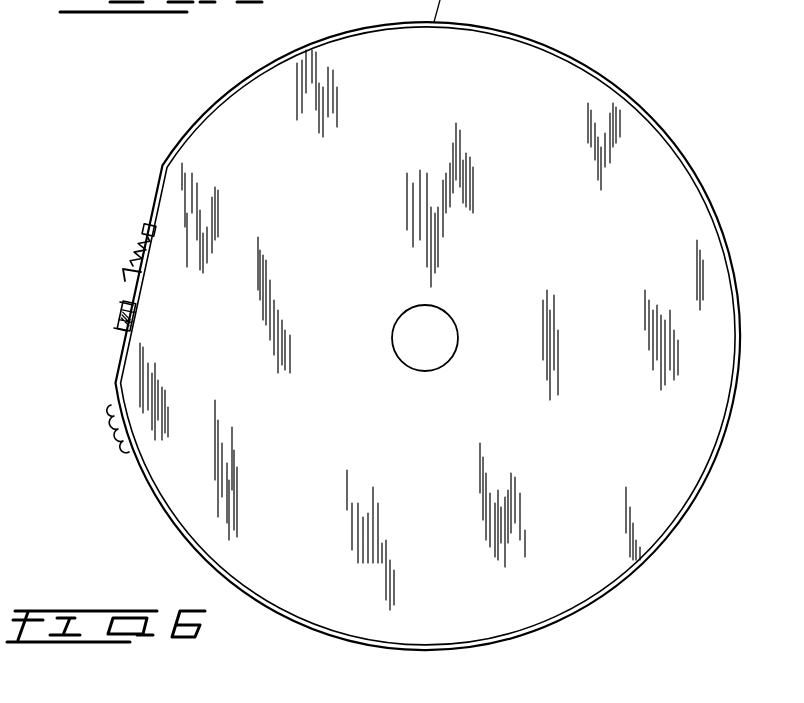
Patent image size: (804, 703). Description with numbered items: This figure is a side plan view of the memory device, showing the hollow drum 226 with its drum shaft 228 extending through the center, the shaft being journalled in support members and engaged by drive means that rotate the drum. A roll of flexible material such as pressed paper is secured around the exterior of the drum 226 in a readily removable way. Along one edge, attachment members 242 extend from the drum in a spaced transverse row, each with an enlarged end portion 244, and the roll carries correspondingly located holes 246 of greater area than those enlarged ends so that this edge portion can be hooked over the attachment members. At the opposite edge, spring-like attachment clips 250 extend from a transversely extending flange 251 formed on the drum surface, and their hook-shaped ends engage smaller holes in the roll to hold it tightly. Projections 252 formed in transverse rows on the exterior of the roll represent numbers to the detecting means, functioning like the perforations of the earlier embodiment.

The hollow drum 226 is at (667, 147).
The drum shaft 228 is at (448, 314).
The attachment member 242 is at (134, 308).
The enlarged end portion 244 is at (119, 312).
The hole 246 is at (129, 331).
The spring-like attachment clip 250 is at (143, 228).
The transversely extending flange 251 is at (119, 269).
The projection 252 is at (110, 410).